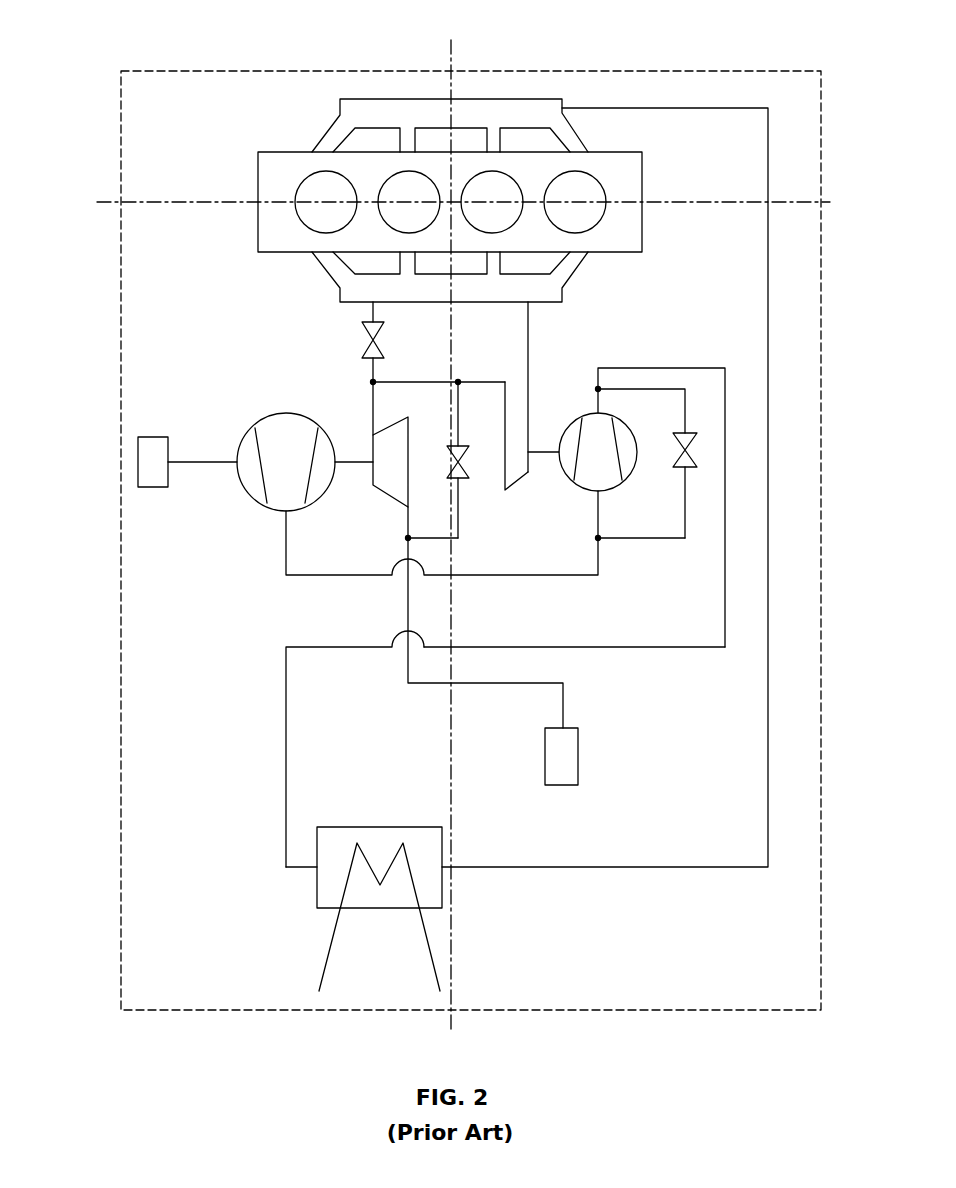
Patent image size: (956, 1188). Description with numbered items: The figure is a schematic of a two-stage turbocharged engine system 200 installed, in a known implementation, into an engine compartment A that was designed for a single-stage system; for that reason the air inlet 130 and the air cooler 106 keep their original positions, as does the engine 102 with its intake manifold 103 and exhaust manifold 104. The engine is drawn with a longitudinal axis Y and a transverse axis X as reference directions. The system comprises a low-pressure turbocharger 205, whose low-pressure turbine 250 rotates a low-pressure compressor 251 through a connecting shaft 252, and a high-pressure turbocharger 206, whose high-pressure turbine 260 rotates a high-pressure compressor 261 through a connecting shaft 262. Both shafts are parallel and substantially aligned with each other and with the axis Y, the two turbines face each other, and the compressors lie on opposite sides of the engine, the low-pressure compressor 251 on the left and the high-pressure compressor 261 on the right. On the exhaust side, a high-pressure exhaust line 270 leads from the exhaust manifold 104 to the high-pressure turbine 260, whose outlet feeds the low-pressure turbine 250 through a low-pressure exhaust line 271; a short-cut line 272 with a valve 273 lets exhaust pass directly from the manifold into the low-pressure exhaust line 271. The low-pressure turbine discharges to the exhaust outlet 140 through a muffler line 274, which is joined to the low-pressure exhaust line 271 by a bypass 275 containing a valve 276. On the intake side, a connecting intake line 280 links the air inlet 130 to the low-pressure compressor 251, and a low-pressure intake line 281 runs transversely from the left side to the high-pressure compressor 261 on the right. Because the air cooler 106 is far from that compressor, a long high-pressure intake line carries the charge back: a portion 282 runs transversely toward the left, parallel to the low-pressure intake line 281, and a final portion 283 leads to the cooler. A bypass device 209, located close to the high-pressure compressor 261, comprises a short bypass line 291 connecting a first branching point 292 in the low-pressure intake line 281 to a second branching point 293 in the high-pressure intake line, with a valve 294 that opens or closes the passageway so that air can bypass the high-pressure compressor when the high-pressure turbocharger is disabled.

The two-stage turbocharged engine system 200 is at (162, 32).
The engine 102 is at (636, 232).
The intake manifold 103 is at (541, 106).
The exhaust manifold 104 is at (562, 298).
The air cooler 106 is at (317, 892).
The air inlet 130 is at (153, 490).
The exhaust outlet 140 is at (576, 760).
The low-pressure turbocharger 205 is at (294, 448).
The high-pressure turbocharger 206 is at (568, 482).
The bypass device 209 is at (688, 366).
The low-pressure turbine 250 is at (395, 482).
The low-pressure compressor 251 is at (255, 485).
The connecting shaft 252 is at (362, 452).
The high-pressure turbine 260 is at (505, 438).
The high-pressure compressor 261 is at (588, 482).
The connecting shaft 262 is at (538, 450).
The high-pressure exhaust line 270 is at (528, 350).
The low-pressure exhaust line 271 is at (405, 382).
The short-cut line 272 is at (373, 382).
The valve 273 is at (362, 330).
The muffler line 274 is at (514, 684).
The bypass 275 is at (420, 540).
The valve 276 is at (462, 480).
The connecting intake line 280 is at (192, 460).
The low-pressure intake line 281 is at (344, 578).
The portion of high-pressure intake line 282 is at (622, 648).
The final portion of high-pressure intake line 283 is at (286, 748).
The short bypass line 291 is at (686, 516).
The first branching point 292 is at (600, 536).
The second branching point 293 is at (598, 388).
The valve 294 is at (690, 440).
The engine compartment A is at (676, 72).
The X axis X is at (460, 60).
The axis of the engine Y is at (115, 202).